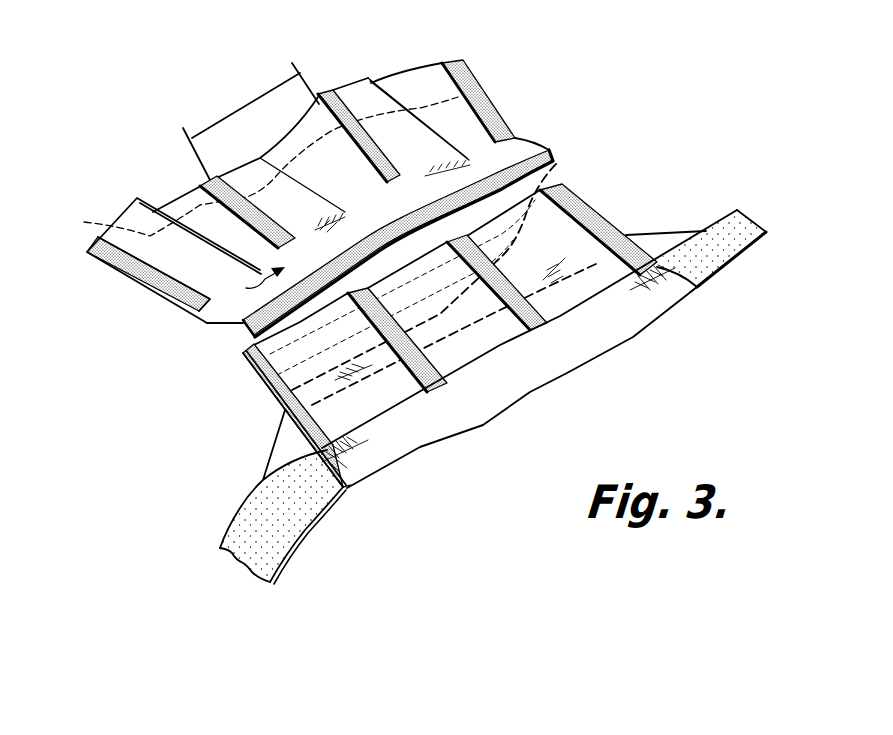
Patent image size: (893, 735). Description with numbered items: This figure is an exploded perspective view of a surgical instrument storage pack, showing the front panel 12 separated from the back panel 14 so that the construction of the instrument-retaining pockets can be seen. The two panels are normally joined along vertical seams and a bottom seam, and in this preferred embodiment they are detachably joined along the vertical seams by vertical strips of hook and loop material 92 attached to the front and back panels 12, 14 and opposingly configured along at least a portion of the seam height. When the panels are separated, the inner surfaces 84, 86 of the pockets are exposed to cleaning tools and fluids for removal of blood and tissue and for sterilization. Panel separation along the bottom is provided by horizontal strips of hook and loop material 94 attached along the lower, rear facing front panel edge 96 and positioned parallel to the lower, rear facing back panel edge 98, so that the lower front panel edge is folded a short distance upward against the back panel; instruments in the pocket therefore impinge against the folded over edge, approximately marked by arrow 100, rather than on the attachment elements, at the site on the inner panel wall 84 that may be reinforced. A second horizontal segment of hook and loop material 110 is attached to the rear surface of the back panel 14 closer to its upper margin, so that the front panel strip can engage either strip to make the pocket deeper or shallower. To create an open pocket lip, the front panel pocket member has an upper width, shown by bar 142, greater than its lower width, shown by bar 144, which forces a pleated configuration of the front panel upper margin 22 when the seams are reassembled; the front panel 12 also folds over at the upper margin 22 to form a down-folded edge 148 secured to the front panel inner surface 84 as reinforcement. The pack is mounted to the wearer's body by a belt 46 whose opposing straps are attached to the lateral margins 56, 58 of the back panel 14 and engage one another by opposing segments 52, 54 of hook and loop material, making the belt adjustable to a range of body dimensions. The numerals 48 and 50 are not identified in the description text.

The front panel 12 is at (212, 314).
The back panel 14 is at (620, 331).
The front panel upper margin 22 is at (120, 217).
The belt 46 is at (318, 498).
The end edge 48 is at (238, 560).
The strap end 50 is at (760, 226).
The segment of hook and loop material 52 is at (284, 550).
The segment of hook and loop material 54 is at (738, 264).
The lateral margin 56 is at (354, 492).
The lateral margin 58 is at (699, 288).
The front panel inner surface 84 is at (460, 127).
The back panel inner surface 86 is at (592, 255).
The vertical strips of hook and loop material 92 is at (265, 210).
The horizontal strips of hook and loop material 94 is at (550, 150).
The lower rear facing front panel edge 96 is at (253, 334).
The lower rear facing back panel edge 98 is at (244, 356).
The folded over edge 100 is at (244, 282).
The second horizontal segment of hook and loop material 110 is at (334, 398).
The upper width 142 is at (242, 104).
The lower width 144 is at (369, 218).
The down-folded edge 148 is at (251, 167).